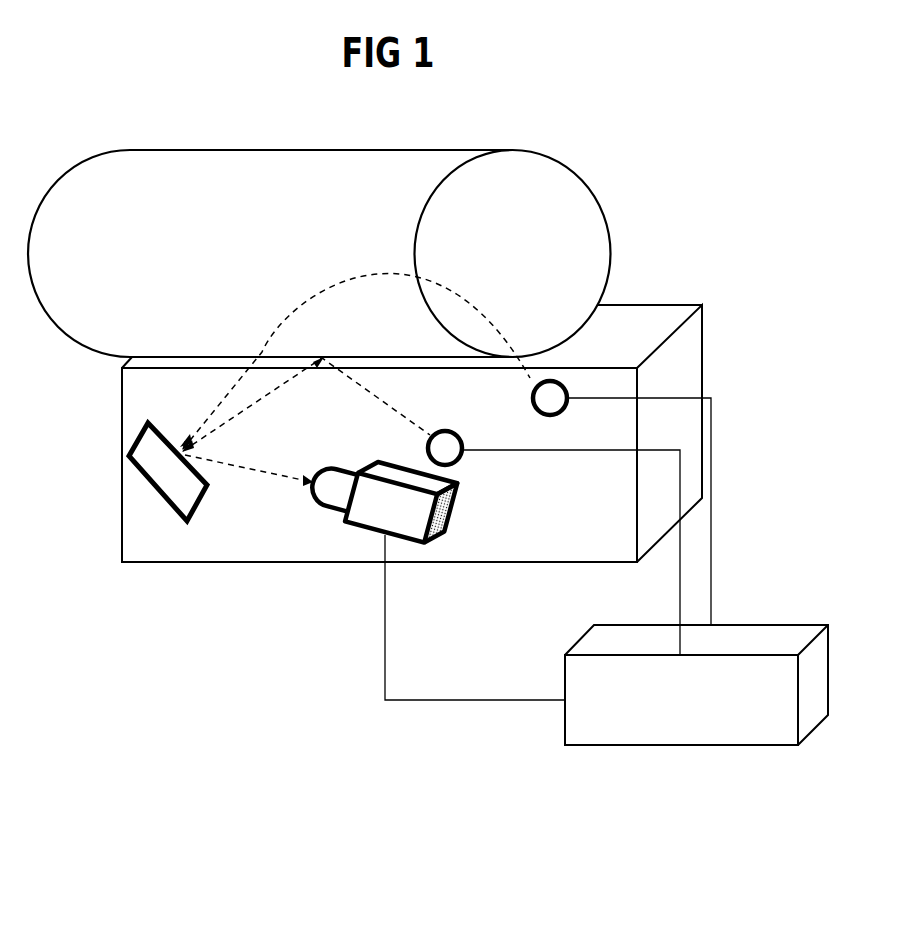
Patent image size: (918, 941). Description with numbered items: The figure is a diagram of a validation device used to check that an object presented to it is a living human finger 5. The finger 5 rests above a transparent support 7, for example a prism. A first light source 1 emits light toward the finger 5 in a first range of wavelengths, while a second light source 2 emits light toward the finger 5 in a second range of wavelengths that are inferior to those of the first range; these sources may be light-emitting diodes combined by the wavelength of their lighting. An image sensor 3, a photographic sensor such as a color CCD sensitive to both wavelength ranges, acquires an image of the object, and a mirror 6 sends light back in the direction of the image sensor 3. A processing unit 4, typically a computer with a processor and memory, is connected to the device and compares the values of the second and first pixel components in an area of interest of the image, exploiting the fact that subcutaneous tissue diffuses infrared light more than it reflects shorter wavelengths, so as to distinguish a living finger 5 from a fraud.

The first light source 1 is at (566, 386).
The second light source 2 is at (453, 465).
The image sensor 3 is at (353, 522).
The processing unit 4 is at (602, 715).
The finger 5 is at (547, 185).
The mirror 6 is at (155, 483).
The support 7 is at (668, 380).